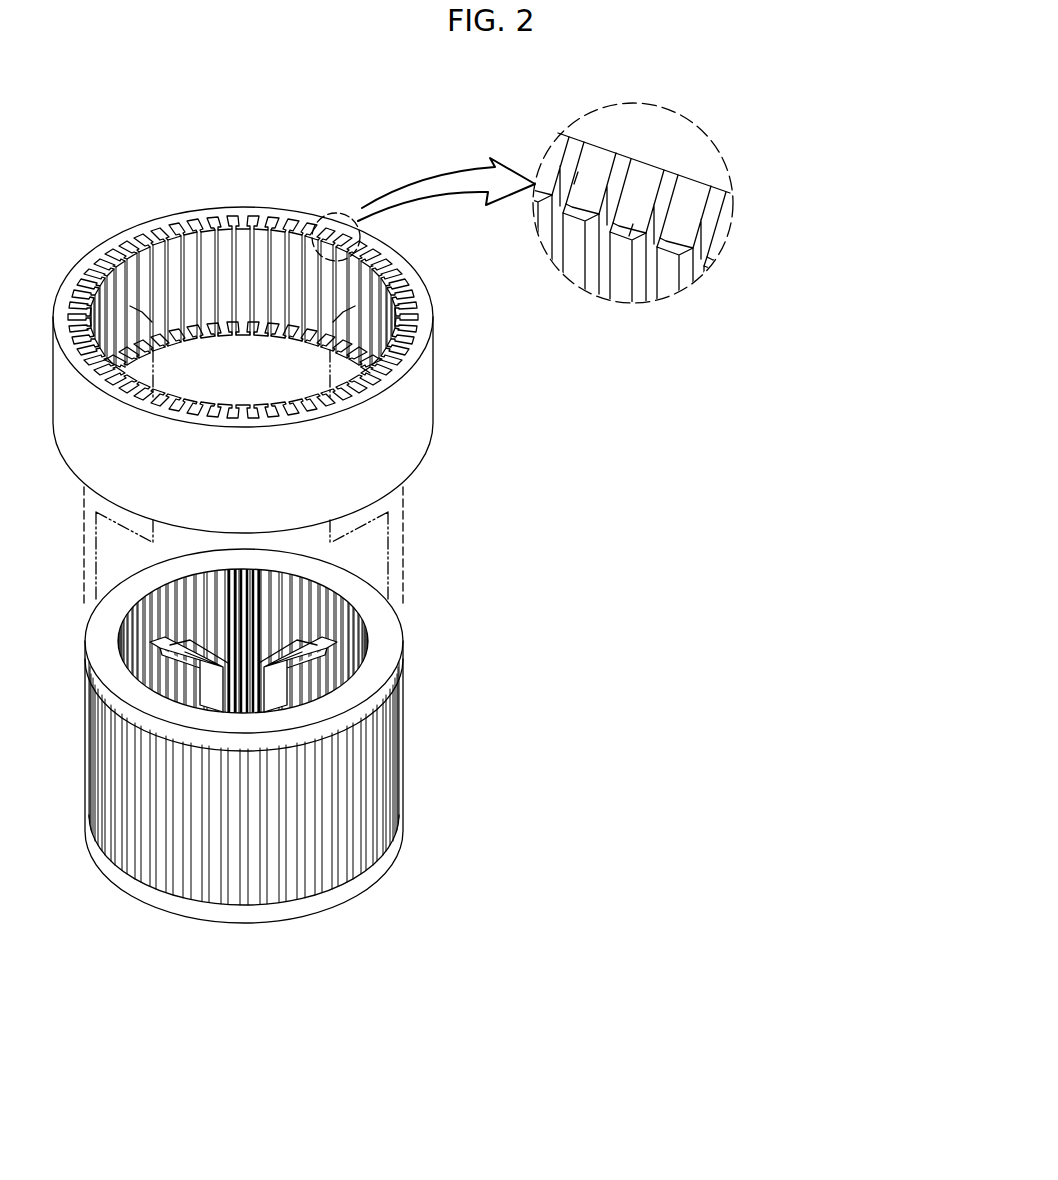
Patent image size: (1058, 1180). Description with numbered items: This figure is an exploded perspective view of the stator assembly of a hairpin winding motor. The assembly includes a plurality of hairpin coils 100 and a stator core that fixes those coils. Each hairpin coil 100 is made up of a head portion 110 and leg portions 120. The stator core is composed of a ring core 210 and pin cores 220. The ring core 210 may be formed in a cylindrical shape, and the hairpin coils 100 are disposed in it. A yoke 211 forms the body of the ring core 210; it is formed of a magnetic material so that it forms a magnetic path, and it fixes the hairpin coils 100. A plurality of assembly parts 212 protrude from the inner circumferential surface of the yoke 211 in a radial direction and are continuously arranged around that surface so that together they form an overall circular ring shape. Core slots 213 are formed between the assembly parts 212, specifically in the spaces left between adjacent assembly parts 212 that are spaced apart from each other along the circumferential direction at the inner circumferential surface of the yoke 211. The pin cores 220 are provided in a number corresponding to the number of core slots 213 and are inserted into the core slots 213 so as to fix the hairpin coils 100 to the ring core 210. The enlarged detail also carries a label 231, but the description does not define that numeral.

The hairpin coil 100 is at (271, 785).
The head portion 110 is at (368, 880).
The leg portions 120 is at (300, 867).
The ring core 210 is at (433, 393).
The yoke 211 is at (677, 183).
The assembly parts 212 is at (637, 177).
The core slots 213 is at (678, 213).
The pin cores 220 is at (345, 662).
The insulator 231 is at (635, 220).